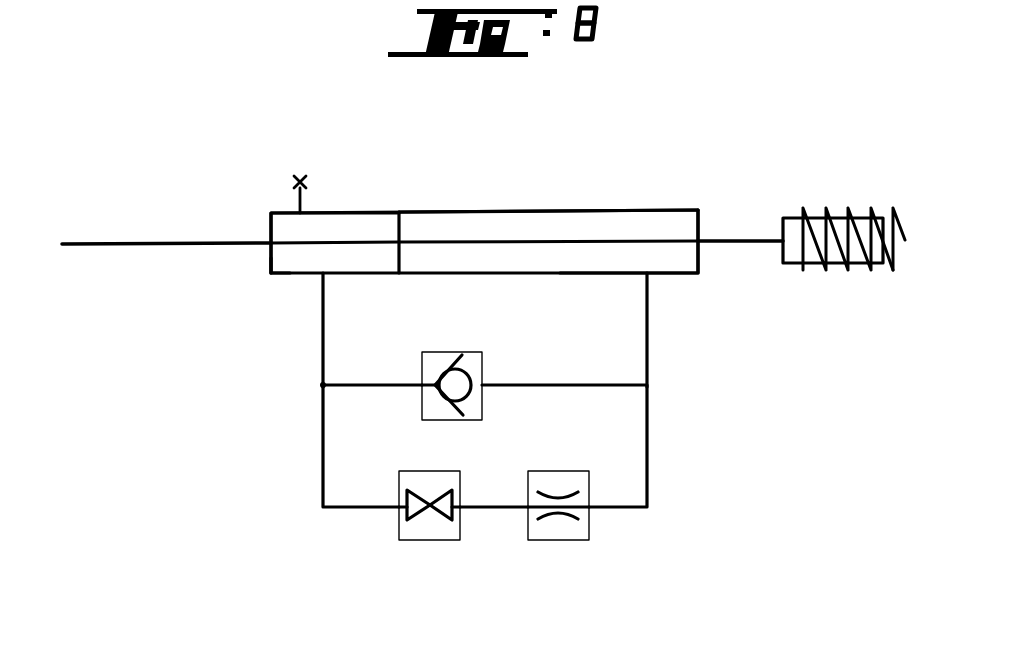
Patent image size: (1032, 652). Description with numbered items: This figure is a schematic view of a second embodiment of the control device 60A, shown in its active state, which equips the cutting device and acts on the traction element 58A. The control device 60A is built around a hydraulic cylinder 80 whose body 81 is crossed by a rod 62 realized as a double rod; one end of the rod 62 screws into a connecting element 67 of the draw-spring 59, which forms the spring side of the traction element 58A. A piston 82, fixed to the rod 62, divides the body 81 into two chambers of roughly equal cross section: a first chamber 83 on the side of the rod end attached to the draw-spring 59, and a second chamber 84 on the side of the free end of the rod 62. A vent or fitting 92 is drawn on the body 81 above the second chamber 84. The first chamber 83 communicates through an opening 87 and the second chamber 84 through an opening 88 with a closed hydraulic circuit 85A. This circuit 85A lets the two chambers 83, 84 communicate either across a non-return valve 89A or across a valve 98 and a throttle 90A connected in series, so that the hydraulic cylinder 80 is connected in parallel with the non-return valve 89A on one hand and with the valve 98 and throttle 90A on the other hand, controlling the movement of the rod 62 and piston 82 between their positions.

The traction element 58A is at (826, 180).
The draw-spring 59 is at (893, 212).
The control device 60A is at (262, 280).
The rod 62 is at (740, 240).
The connecting element 67 is at (858, 265).
The hydraulic cylinder 80 is at (583, 210).
The body 81 is at (472, 210).
The piston 82 is at (398, 225).
The first chamber 83 is at (633, 222).
The second chamber 84 is at (280, 228).
The closed hydraulic circuit 85A is at (313, 426).
The opening 87 is at (642, 275).
The opening 88 is at (325, 277).
The non-return valve 89A is at (466, 370).
The throttle 90A is at (555, 512).
The vent 92 is at (293, 178).
The valve 98 is at (432, 512).